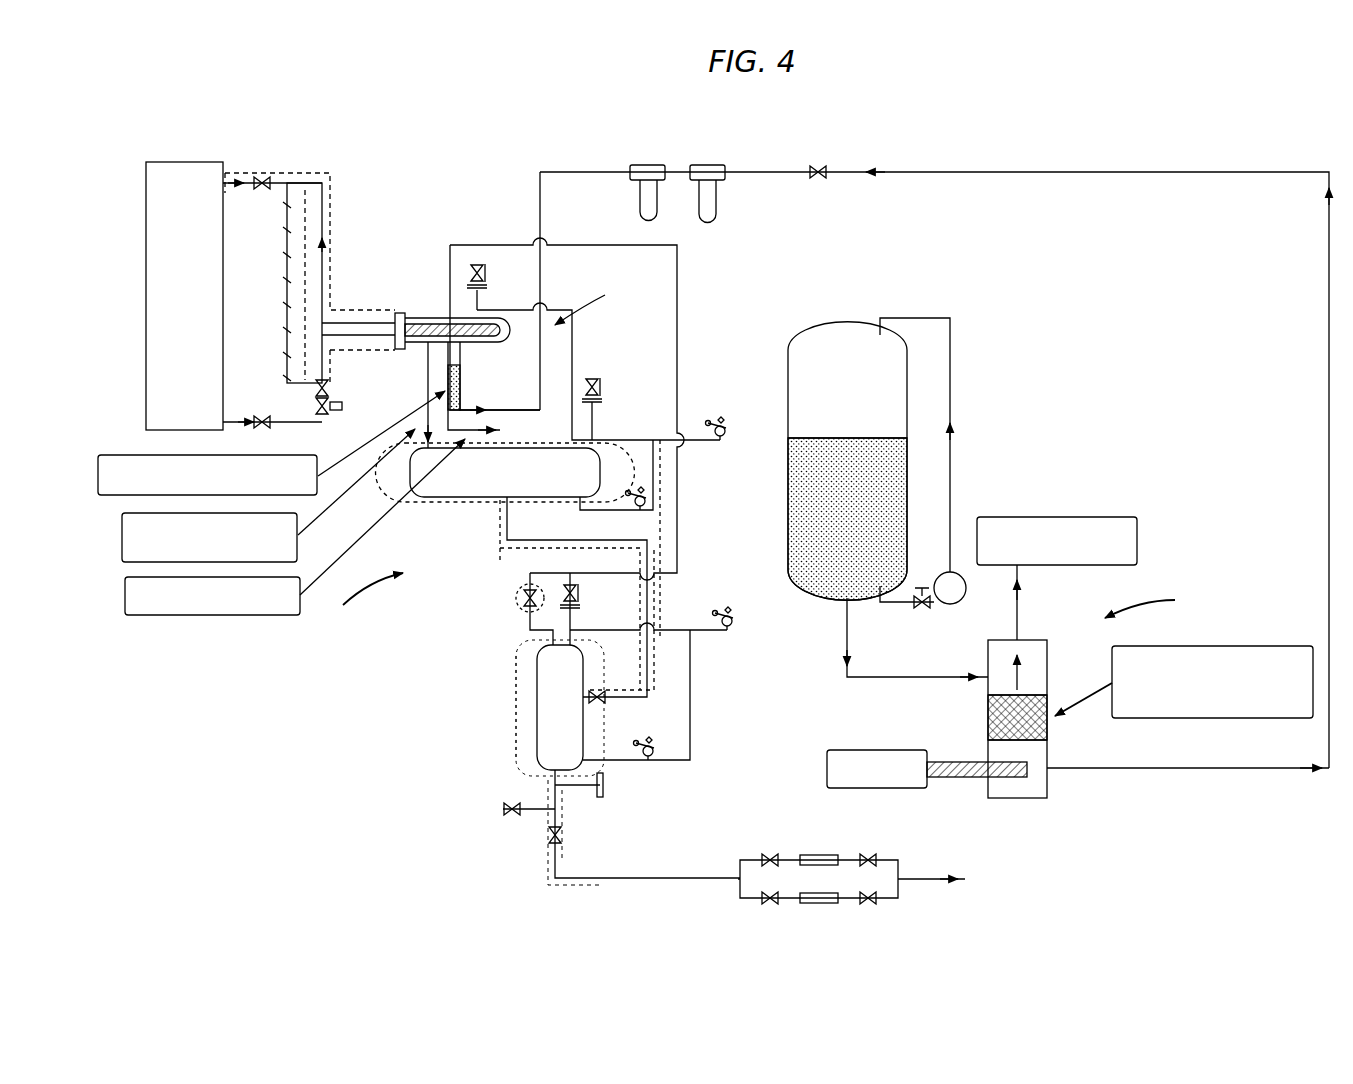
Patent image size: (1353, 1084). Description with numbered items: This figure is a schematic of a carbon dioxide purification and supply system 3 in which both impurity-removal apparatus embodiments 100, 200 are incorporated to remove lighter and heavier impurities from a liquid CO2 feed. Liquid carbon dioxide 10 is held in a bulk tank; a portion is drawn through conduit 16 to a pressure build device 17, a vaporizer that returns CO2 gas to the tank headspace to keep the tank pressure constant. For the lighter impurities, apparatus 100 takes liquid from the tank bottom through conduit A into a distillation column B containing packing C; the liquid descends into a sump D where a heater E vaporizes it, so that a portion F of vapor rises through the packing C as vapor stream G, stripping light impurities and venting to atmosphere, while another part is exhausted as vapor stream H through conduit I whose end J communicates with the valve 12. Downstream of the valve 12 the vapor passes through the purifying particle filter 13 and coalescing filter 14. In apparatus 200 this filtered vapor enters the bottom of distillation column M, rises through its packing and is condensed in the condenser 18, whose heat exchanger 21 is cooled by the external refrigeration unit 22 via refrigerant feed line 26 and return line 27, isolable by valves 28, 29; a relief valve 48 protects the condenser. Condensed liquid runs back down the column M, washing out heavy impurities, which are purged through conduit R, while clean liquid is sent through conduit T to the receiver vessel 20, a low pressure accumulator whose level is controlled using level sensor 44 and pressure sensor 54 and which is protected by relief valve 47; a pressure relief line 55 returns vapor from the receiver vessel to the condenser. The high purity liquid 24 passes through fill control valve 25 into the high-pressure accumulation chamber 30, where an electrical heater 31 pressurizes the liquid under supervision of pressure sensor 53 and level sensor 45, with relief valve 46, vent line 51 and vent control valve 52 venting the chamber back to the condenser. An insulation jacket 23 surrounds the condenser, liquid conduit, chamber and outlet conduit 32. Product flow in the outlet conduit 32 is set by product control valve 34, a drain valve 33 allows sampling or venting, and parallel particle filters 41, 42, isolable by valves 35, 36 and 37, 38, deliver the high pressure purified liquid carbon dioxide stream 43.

The CO2 purification system 3 is at (363, 602).
The bulk supply of liquid carbon dioxide 10 is at (835, 534).
The valve 12 is at (818, 170).
The purifying particle filter 13 is at (707, 165).
The coalescing filter 14 is at (648, 165).
The conduit 16 is at (945, 318).
The pressure build device 17 is at (946, 604).
The condenser 18 is at (483, 345).
The receiver vessel 20 is at (460, 497).
The heat exchanger 21 is at (413, 345).
The external refrigeration unit 22 is at (178, 162).
The insulation jacket 23 is at (412, 492).
The high purity CO2 liquid 24 is at (655, 578).
The fill control valve 25 is at (600, 690).
The refrigerant feed line 26 is at (330, 377).
The refrigerant return line 27 is at (322, 265).
The isolation valve 28 is at (272, 175).
The isolation valve 29 is at (342, 406).
The high-pressure accumulation chamber 30 is at (537, 712).
The electrical heater 31 is at (605, 787).
The outlet conduit 32 is at (650, 878).
The drain valve 33 is at (503, 809).
The product control valve 34 is at (562, 835).
The valve 35 is at (770, 858).
The valve 36 is at (868, 858).
The valve 37 is at (770, 900).
The valve 38 is at (868, 900).
The particle filter 41 is at (818, 855).
The particle filter 42 is at (818, 903).
The high pressure purified liquid carbon dioxide stream 43 is at (920, 878).
The level sensor 44 is at (636, 490).
The level sensor 45 is at (656, 770).
The pressure relief valve 46 is at (585, 603).
The pressure relief valve 47 is at (605, 397).
The pressure relief valve 48 is at (490, 285).
The vent line 51 is at (688, 545).
The vent control valve 52 is at (505, 598).
The pressure sensor 53 is at (740, 630).
The pressure sensor 54 is at (730, 420).
The pressure relief line 55 is at (577, 352).
The apparatus for controlling and removing lighter impurities 100 is at (1161, 604).
The apparatus for controlling and removing heavier impurities 200 is at (586, 299).
The conduit A is at (840, 660).
The distillation column B is at (1097, 686).
The packing C is at (992, 710).
The sump D is at (995, 800).
The heater E is at (945, 760).
The portion of vaporized CO2 F is at (1050, 752).
The vapor stream G is at (1020, 620).
The vapor stream H is at (1035, 800).
The conduit I is at (1157, 770).
The end of conduit J is at (862, 172).
The distillation column M is at (98, 472).
The conduit R is at (125, 598).
The conduit T is at (122, 535).